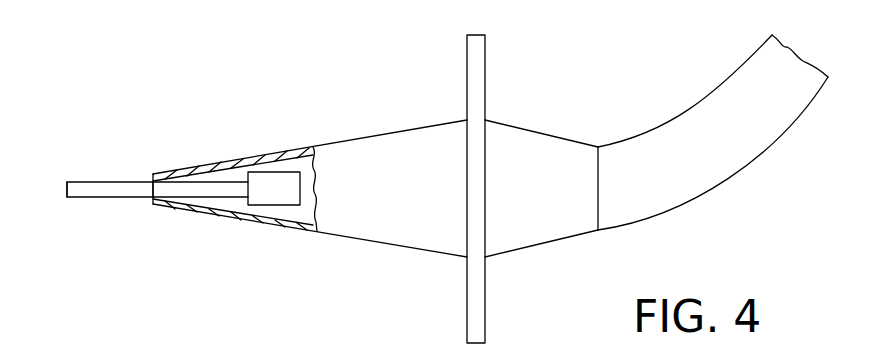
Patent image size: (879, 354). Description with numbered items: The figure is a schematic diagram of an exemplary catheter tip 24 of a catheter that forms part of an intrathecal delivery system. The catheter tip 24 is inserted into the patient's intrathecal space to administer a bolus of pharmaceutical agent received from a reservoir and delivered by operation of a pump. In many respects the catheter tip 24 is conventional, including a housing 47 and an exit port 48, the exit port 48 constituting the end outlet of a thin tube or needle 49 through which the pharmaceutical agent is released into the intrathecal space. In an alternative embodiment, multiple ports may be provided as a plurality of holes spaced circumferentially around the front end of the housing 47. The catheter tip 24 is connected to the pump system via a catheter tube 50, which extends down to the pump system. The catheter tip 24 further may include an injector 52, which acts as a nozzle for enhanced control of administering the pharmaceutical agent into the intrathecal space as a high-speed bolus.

The catheter tip 24 is at (355, 78).
The housing 47 is at (345, 141).
The exit port 48 is at (67, 188).
The thin tube or needle 49 is at (115, 197).
The catheter tube 50 is at (690, 115).
The injector 52 is at (247, 203).